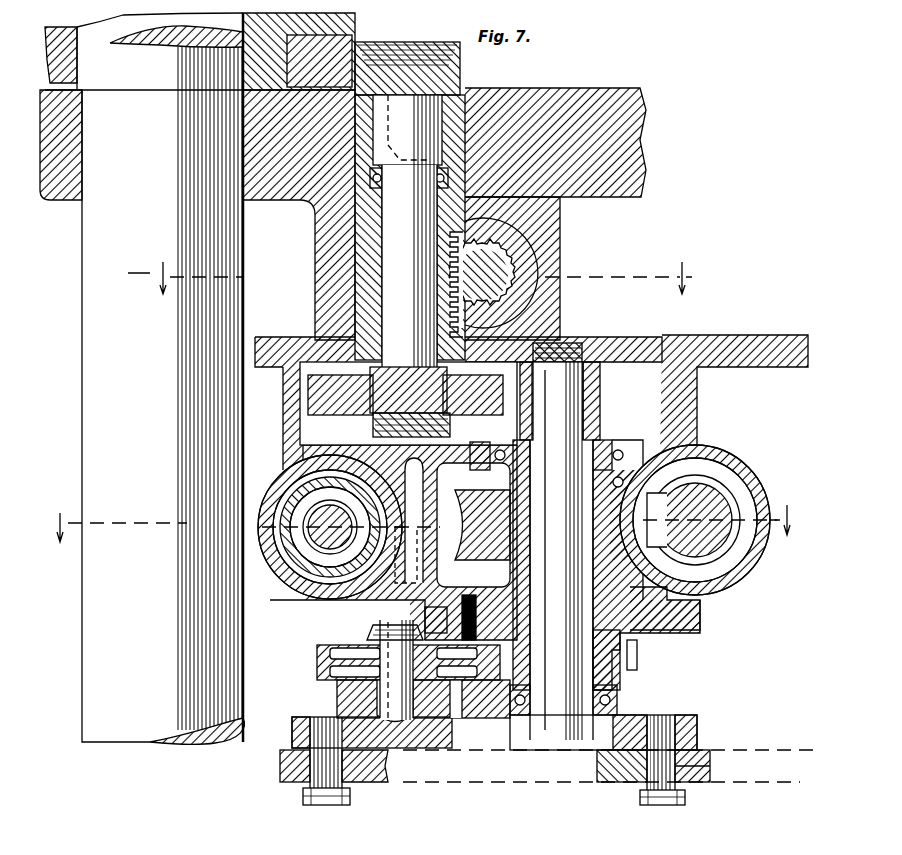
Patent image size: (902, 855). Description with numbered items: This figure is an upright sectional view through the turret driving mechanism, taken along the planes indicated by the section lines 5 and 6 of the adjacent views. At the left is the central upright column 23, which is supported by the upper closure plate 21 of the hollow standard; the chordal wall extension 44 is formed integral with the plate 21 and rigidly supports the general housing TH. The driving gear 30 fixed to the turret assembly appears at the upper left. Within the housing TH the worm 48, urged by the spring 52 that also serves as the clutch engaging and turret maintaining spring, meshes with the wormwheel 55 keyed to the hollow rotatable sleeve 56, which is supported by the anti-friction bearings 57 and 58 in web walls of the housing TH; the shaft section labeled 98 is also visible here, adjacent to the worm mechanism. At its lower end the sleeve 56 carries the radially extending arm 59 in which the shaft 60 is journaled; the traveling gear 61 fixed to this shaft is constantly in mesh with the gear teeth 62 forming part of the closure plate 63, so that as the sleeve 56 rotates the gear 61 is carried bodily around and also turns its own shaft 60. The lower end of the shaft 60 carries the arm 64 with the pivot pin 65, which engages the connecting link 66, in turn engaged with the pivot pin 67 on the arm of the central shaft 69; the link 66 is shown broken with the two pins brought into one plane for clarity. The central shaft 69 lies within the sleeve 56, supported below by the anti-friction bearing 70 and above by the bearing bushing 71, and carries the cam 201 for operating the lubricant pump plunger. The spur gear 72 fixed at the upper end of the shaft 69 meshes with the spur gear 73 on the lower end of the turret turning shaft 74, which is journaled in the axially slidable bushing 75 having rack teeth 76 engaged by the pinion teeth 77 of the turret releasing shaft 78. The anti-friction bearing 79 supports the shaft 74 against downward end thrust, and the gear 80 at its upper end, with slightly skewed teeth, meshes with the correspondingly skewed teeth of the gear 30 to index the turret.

The section line 5- 5 is at (415, 278).
The section line 6- 6 is at (698, 732).
The upper closure plate 21 is at (57, 200).
The central upright column 23 is at (82, 497).
The driving gear 30 is at (295, 92).
The extension 44 is at (325, 244).
The worm 48 is at (705, 512).
The spring 52 is at (337, 557).
The wormwheel 55 is at (655, 475).
The hollow rotatable sleeve 56 is at (606, 452).
The anti-friction bearing 57 is at (618, 470).
The anti-friction bearing 58 is at (648, 648).
The radially extending arm 59 is at (490, 707).
The shaft 60 is at (420, 745).
The traveling gear 61 is at (332, 648).
The gear teeth 62 is at (650, 642).
The closure plate 63 is at (705, 617).
The radially extending arm 64 is at (300, 718).
The pivot pin 65 is at (322, 770).
The connecting link 66 is at (370, 780).
The pivot pin 67 is at (710, 765).
The central shaft 69 is at (557, 705).
The anti-friction bearing 70 is at (521, 712).
The bearing bushing 71 is at (605, 432).
The spur gear 72 is at (594, 372).
The spur gear 73 is at (512, 338).
The turret turning shaft 74 is at (410, 301).
The axially slidable bushing 75 is at (470, 110).
The rack teeth 76 is at (500, 237).
The pinion teeth 77 is at (538, 285).
The turret releasing shaft 78 is at (508, 262).
The anti-friction bearing 79 is at (380, 182).
The gear 80 is at (461, 52).
The shaft 98 is at (318, 540).
The cam 201 is at (452, 522).
The general housing TH is at (757, 580).